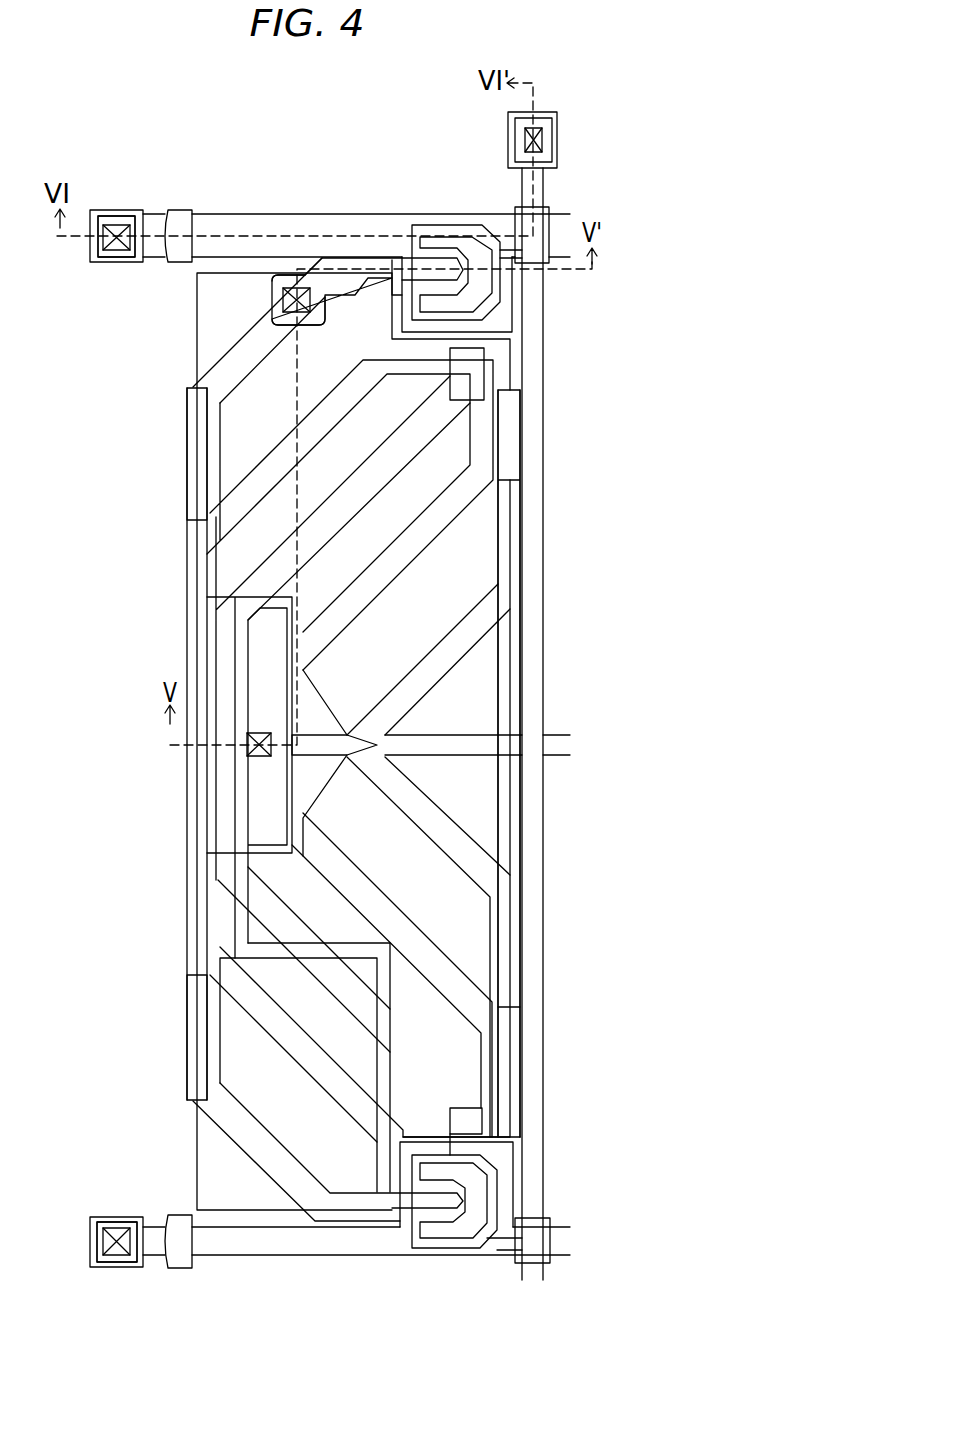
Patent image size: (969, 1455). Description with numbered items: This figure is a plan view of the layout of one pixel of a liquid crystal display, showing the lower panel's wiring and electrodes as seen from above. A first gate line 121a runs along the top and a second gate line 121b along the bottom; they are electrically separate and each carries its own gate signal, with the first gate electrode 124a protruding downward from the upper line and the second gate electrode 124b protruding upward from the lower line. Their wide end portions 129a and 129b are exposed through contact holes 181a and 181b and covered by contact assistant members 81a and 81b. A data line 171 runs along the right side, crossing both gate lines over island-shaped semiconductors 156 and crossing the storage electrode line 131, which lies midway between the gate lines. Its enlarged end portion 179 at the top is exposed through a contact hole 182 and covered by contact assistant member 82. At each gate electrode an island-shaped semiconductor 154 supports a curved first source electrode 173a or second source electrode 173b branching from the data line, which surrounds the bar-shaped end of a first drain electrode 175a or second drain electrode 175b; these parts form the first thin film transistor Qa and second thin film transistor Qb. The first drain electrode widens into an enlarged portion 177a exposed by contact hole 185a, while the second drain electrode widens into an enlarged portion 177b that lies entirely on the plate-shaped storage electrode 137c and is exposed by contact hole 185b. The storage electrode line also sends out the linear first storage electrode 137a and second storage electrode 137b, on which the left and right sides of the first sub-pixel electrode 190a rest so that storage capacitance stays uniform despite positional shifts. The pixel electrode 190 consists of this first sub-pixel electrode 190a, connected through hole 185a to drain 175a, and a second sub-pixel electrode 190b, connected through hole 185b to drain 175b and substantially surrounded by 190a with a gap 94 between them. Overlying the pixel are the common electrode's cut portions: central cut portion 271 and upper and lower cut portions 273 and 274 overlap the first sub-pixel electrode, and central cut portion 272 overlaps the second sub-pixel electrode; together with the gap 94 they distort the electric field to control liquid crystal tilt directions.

The contact assistant member 82 is at (557, 130).
The end portion of data line 179 is at (515, 136).
The contact hole 182 is at (542, 140).
The end portion of first gate line 129a is at (116, 212).
The island-shaped semiconductor 156 is at (180, 212).
The first gate line 121a is at (215, 215).
The first thin film transistor Qa is at (403, 242).
The first source electrode 173a is at (440, 236).
The island-shaped semiconductor 154 is at (467, 226).
The contact assistant member 81a is at (90, 236).
The contact hole 181a is at (118, 255).
The first drain electrode 175a is at (470, 273).
The first gate electrode 124a is at (513, 324).
The enlarged portion of first drain electrode 177a is at (272, 296).
The contact hole 185a is at (268, 317).
The upper cut portion 273 is at (205, 372).
The second storage electrode 137b is at (512, 406).
The central cut portion 272 is at (432, 443).
The first storage electrode 137a is at (192, 522).
The plate-shaped storage electrode 137c is at (250, 585).
The enlarged portion of second drain electrode 177b is at (236, 637).
The central cut portion 271 is at (465, 665).
The storage electrode line 131 is at (543, 738).
The data line 171 is at (544, 794).
The contact hole 185b is at (257, 760).
The gap 94 is at (210, 958).
The first sub-pixel electrode 190a is at (514, 1034).
The second sub-pixel electrode 190b is at (500, 1058).
The pixel electrode 190 is at (645, 1020).
The lower cut portion 274 is at (215, 1138).
The second gate electrode 124b is at (513, 1163).
The second drain electrode 175b is at (460, 1203).
The end portion of second gate line 129b is at (118, 1220).
The contact assistant member 81b is at (90, 1248).
The contact hole 181b is at (120, 1262).
The second gate line 121b is at (290, 1258).
The second thin film transistor Qb is at (401, 1240).
The second source electrode 173b is at (480, 1241).